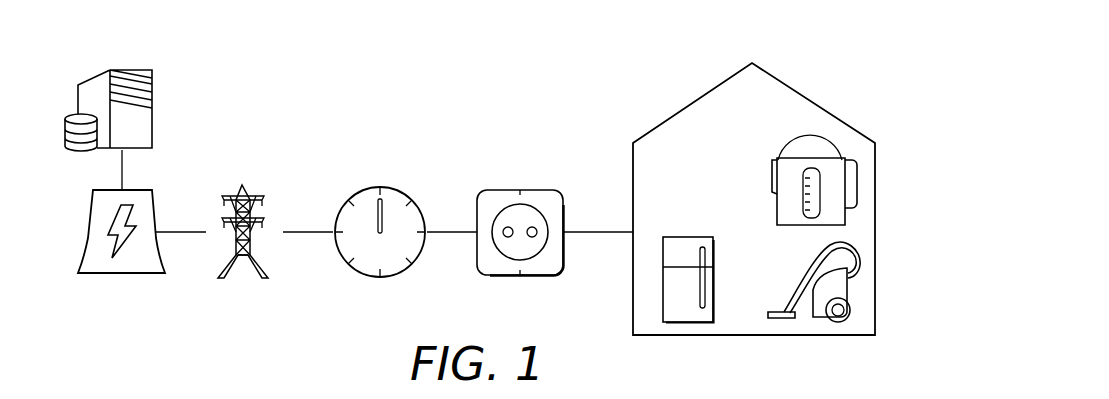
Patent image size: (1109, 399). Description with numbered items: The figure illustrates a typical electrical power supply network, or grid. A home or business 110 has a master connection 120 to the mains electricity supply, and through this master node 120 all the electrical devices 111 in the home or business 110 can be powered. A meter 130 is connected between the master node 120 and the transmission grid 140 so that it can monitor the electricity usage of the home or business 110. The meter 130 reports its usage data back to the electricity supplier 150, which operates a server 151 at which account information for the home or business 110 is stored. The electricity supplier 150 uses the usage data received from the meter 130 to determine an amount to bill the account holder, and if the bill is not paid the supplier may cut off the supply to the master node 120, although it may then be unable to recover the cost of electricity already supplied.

The home or business 110 is at (752, 63).
The electrical devices 111 is at (857, 170).
The master connection 120 is at (537, 190).
The meter 130 is at (380, 187).
The transmission grid 140 is at (242, 185).
The electricity supplier 150 is at (93, 203).
The server 151 is at (152, 88).